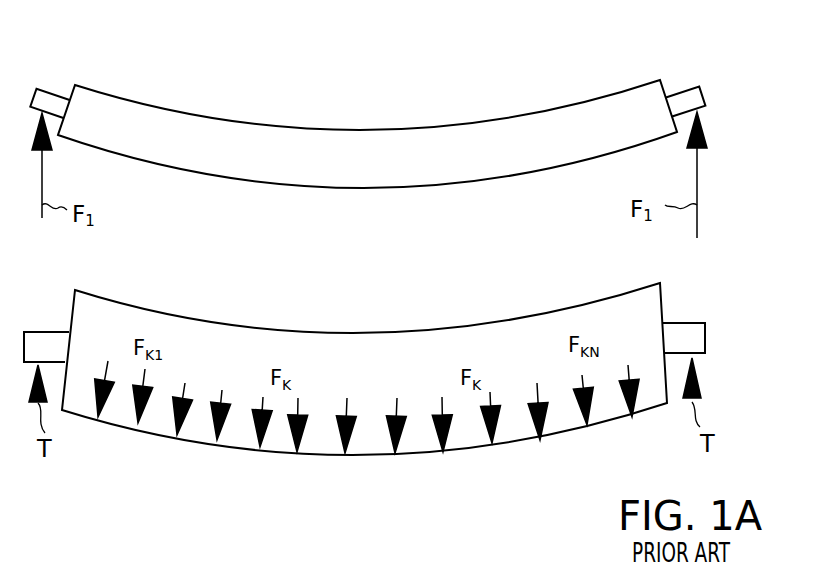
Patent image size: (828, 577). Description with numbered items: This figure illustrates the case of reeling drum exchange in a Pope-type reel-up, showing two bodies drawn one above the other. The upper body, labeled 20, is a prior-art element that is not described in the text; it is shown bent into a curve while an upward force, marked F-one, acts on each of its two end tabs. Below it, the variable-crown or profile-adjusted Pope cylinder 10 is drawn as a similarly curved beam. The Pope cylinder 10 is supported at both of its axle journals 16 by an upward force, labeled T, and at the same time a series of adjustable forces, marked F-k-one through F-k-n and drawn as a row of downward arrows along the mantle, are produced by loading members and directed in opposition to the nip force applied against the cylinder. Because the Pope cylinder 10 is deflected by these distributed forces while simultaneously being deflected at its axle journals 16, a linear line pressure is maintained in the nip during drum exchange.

The bar under point loads (prior art) 20 is at (500, 137).
The Pope cylinder 10 is at (343, 343).
The axle journals 16 is at (42, 342).